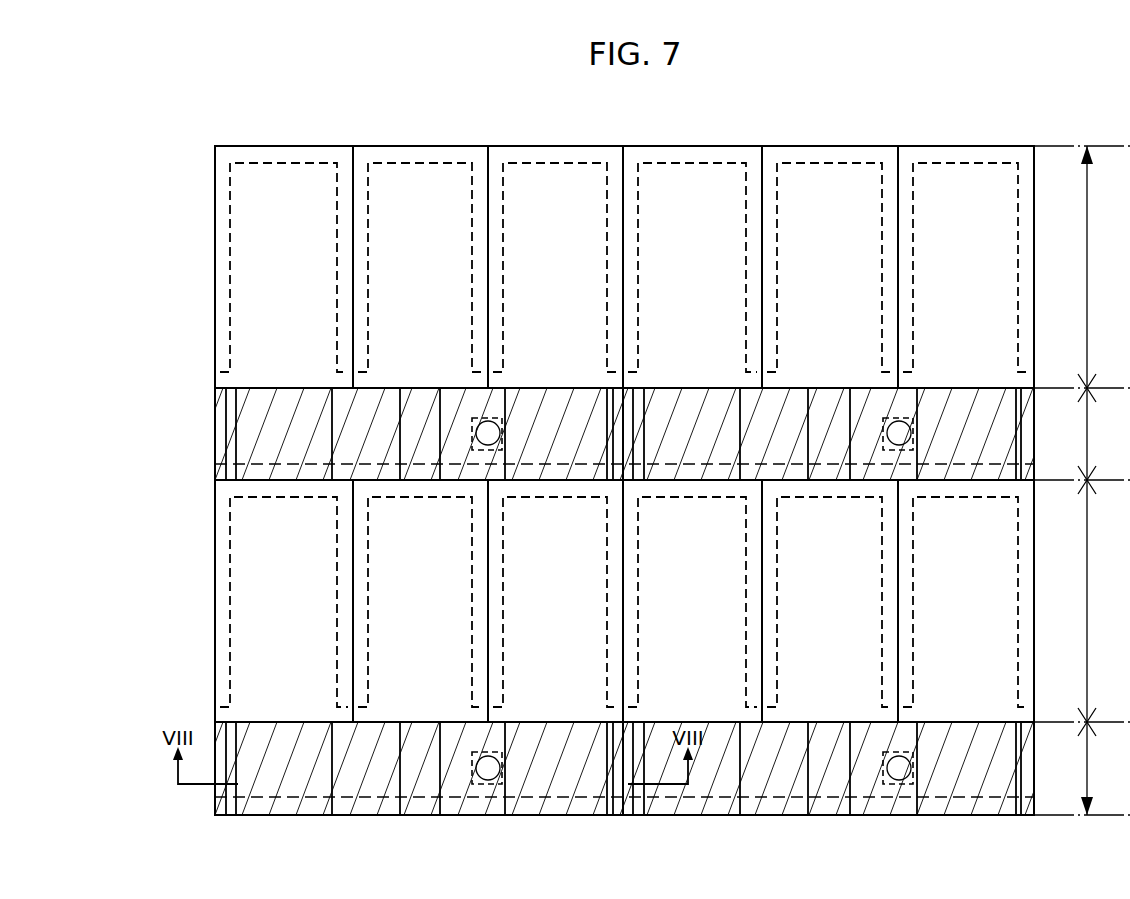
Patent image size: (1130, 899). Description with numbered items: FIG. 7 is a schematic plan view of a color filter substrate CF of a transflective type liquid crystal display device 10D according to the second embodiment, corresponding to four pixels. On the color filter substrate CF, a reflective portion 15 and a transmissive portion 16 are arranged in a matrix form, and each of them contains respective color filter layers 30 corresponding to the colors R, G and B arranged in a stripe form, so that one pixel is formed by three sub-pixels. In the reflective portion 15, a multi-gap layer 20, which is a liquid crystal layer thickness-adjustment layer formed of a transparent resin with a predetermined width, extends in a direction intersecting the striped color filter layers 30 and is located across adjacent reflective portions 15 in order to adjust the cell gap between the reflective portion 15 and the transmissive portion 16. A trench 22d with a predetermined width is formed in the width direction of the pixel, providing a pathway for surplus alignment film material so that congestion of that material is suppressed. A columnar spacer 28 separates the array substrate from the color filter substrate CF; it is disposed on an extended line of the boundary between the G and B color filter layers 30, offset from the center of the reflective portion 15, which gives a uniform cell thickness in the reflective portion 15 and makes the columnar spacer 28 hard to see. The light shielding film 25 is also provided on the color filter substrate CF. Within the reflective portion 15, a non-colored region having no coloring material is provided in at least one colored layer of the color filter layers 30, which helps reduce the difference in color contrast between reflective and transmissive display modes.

The transflective type liquid crystal display device 10D is at (703, 100).
The color filter substrate CF is at (1004, 145).
The light shielding film 25 is at (255, 159).
The color filter layers 30 is at (253, 295).
The multi-gap layer 20 is at (277, 432).
The trench 22d is at (632, 714).
The columnar spacer 28 is at (499, 786).
The transmissive portion 16 is at (1082, 480).
The reflective portion 15 is at (1101, 578).